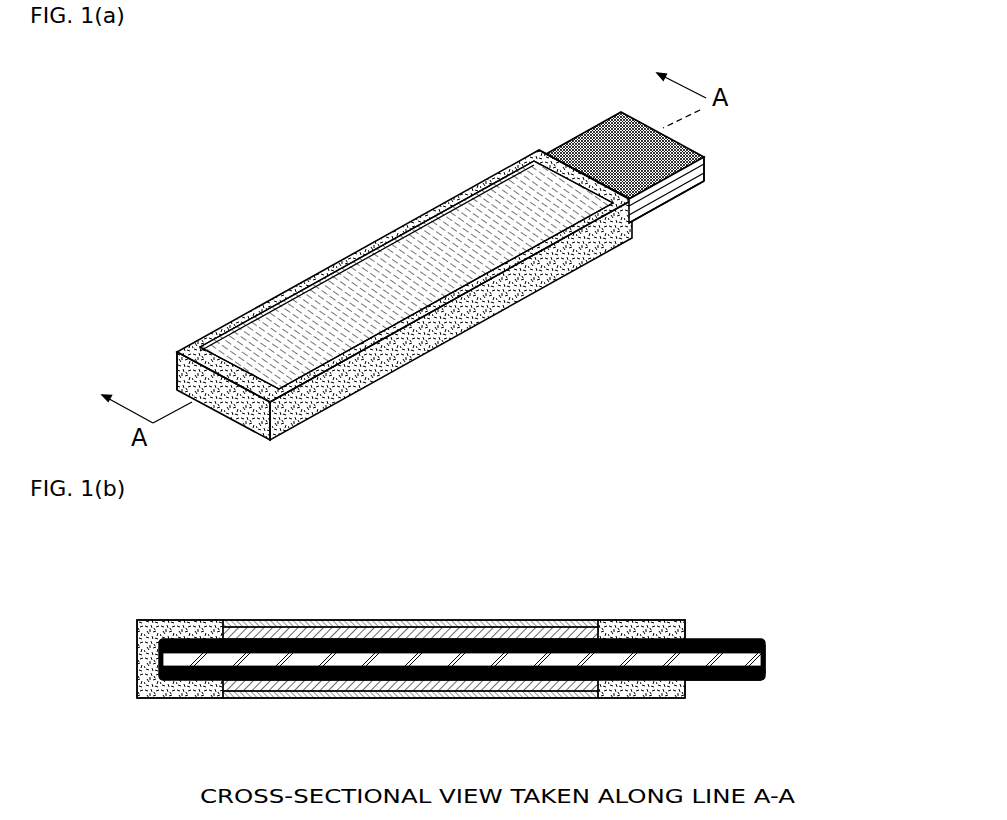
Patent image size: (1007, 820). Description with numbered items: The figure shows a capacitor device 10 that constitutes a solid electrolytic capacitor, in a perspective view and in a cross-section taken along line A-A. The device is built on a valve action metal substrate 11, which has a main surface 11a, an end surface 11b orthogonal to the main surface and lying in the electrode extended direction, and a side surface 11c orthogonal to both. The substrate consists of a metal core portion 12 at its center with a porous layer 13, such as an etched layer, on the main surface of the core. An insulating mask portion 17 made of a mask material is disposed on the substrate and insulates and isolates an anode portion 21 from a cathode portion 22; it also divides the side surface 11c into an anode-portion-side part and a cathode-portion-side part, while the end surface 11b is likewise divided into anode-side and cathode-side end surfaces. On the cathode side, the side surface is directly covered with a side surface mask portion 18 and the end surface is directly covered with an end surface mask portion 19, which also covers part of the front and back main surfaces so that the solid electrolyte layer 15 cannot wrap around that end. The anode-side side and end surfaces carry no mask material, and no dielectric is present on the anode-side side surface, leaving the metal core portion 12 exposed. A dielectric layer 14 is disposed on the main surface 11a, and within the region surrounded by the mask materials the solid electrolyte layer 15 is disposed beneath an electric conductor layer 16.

In FIG. 1A, the capacitor device 10 is at (386, 280).
In FIG. 1B, the capacitor device 10 is at (433, 651).
In FIG. 1A, the valve action metal substrate 11 is at (505, 272).
In FIG. 1B, the valve action metal substrate 11 is at (470, 667).
In FIG. 1A, the main surface 11a is at (465, 222).
In FIG. 1B, the main surface 11a is at (425, 638).
In FIG. 1A, the end surface 11b is at (706, 150).
In FIG. 1B, the end surface 11b is at (158, 657).
In FIG. 1A, the side surface 11c is at (602, 271).
In FIG. 1A, the metal core portion 12 is at (706, 170).
In FIG. 1B, the metal core portion 12 is at (762, 660).
In FIG. 1A, the porous layer 13 is at (706, 161).
In FIG. 1B, the porous layer 13 is at (765, 643).
In FIG. 1A, the dielectric layer 14 is at (588, 124).
In FIG. 1B, the dielectric layer 14 is at (503, 640).
In FIG. 1B, the solid electrolyte layer 15 is at (372, 632).
In FIG. 1A, the electric conductor layer 16 is at (290, 308).
In FIG. 1B, the electric conductor layer 16 is at (307, 622).
In FIG. 1A, the insulating mask portion 17 is at (540, 152).
In FIG. 1B, the insulating mask portion 17 is at (615, 622).
In FIG. 1A, the side surface mask portion 18 is at (380, 242).
In FIG. 1A, the end surface mask portion 19 is at (198, 350).
In FIG. 1B, the end surface mask portion 19 is at (183, 632).
In FIG. 1A, the anode portion 21 is at (692, 200).
In FIG. 1B, the anode portion 21 is at (708, 683).
In FIG. 1A, the cathode portion 22 is at (350, 410).
In FIG. 1B, the cathode portion 22 is at (258, 699).